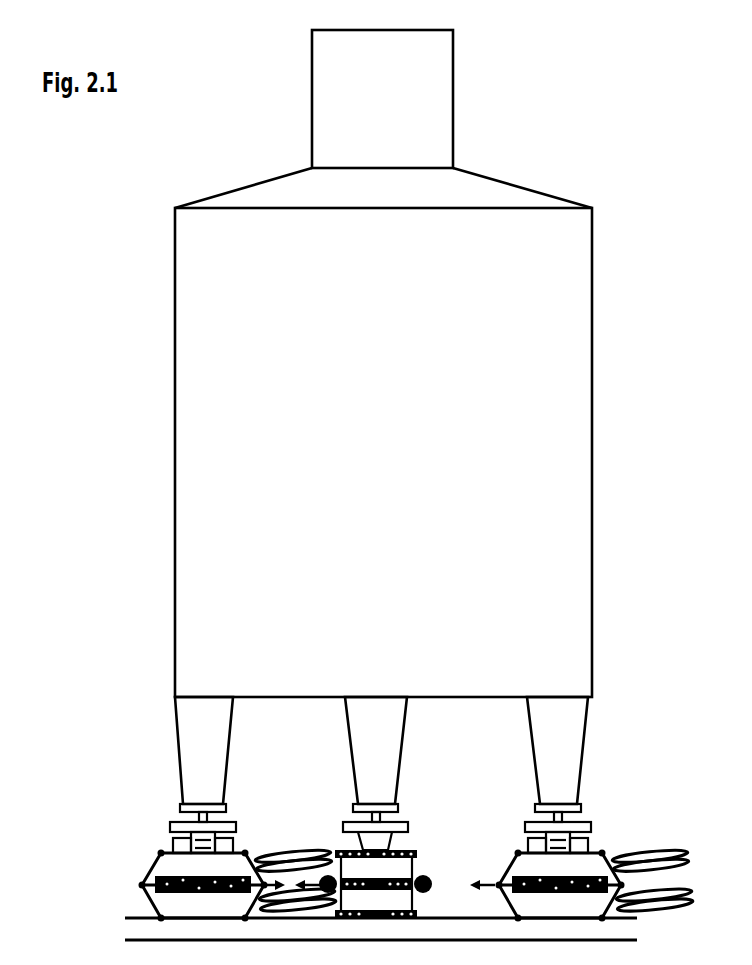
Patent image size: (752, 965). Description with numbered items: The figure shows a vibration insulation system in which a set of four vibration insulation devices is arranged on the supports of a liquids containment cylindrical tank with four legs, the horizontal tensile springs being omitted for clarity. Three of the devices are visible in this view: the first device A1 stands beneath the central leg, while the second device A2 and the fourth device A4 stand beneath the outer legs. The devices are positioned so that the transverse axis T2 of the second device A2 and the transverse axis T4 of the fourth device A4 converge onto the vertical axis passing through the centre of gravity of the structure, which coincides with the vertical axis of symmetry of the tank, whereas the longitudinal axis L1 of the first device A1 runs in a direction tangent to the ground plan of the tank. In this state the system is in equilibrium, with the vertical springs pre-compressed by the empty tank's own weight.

The first vibration insulation device A1 is at (387, 881).
The second vibration insulation device A2 is at (232, 882).
The fourth vibration insulation device A4 is at (595, 884).
The transverse axis of the second device T2 is at (273, 869).
The transverse axis of the fourth device T4 is at (486, 870).
The longitudinal axis of the first device L1 is at (311, 870).